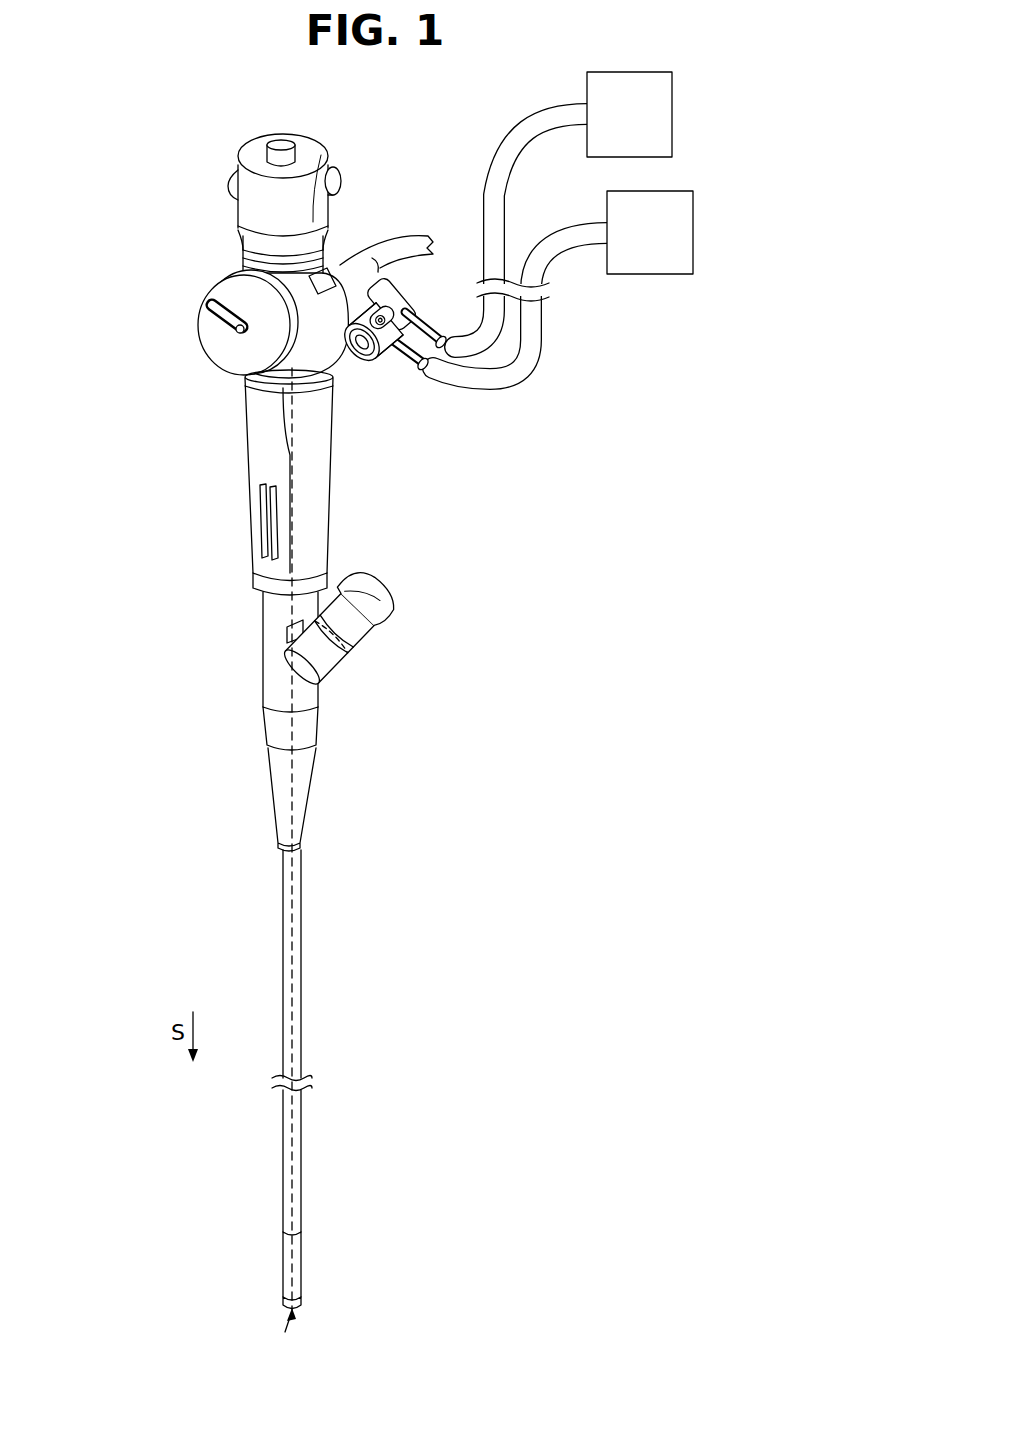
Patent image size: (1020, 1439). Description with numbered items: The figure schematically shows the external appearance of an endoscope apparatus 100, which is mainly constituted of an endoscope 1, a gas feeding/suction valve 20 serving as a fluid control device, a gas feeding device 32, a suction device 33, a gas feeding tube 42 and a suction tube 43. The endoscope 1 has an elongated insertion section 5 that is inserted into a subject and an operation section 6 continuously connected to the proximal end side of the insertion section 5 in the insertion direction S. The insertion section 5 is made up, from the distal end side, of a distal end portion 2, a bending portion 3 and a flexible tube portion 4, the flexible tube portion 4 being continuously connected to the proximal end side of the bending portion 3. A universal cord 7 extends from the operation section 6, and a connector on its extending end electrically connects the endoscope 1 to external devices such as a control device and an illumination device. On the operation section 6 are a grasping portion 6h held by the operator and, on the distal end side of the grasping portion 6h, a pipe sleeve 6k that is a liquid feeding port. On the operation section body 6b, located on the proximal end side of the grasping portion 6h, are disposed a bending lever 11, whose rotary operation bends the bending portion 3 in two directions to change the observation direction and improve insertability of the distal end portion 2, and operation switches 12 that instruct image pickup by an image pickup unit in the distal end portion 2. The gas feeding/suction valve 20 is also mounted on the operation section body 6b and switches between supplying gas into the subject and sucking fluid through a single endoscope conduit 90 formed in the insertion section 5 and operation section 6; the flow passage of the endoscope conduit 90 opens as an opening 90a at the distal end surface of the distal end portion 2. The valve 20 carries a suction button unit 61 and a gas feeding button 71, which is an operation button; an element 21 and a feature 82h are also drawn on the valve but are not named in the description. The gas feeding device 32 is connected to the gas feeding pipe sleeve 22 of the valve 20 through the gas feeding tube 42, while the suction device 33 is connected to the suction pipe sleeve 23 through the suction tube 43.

The endoscope 1 is at (215, 540).
The distal end portion 2 is at (324, 1300).
The bending portion 3 is at (297, 1259).
The flexible tube portion 4 is at (297, 1047).
The insertion section 5 is at (338, 1081).
The operation section 6 is at (272, 455).
The operation section body 6b is at (235, 348).
The grasping portion 6h is at (260, 460).
The pipe sleeve 6k is at (340, 665).
The universal cord 7 is at (347, 260).
The bending lever 11 is at (212, 284).
The operation switches 12 is at (330, 168).
The gas feeding/suction valve 20 is at (407, 298).
The connection member 21 is at (396, 300).
The gas feeding pipe sleeve 22 is at (406, 352).
The suction pipe sleeve 23 is at (430, 334).
The gas feeding device 32 is at (694, 232).
The suction device 33 is at (673, 112).
The gas feeding tube 42 is at (558, 243).
The suction tube 43 is at (503, 152).
The suction button unit 61 is at (364, 348).
The gas feeding button 71 is at (385, 330).
The hole 82h is at (372, 258).
The endoscope conduit 90 is at (294, 955).
The opening 90a is at (283, 1332).
The endoscope apparatus 100 is at (608, 560).